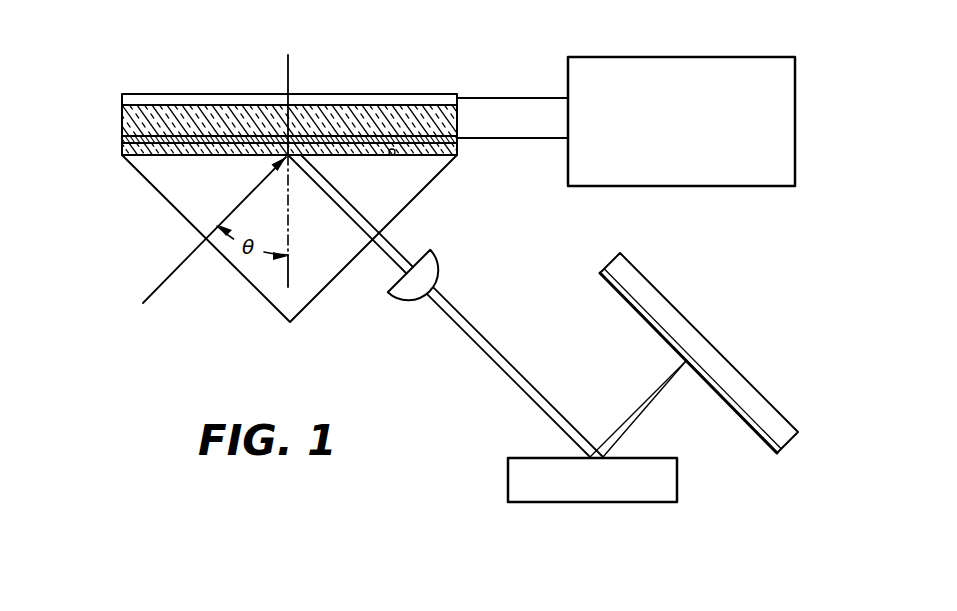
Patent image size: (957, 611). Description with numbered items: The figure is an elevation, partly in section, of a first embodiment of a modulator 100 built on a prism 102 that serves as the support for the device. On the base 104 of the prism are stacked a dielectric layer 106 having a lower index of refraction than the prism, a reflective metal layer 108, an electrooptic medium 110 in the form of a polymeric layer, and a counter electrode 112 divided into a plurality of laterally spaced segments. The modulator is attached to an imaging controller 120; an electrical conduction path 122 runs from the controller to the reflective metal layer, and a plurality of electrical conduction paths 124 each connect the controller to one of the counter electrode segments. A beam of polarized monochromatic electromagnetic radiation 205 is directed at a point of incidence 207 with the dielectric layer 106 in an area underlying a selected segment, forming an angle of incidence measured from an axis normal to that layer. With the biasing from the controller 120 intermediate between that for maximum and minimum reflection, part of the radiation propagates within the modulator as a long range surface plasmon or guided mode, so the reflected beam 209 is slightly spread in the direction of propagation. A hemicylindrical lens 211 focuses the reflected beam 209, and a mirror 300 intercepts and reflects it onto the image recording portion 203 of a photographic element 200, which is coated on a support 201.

The modulator 100 is at (352, 57).
The prism 102 is at (420, 192).
The base 104 is at (393, 158).
The dielectric layer 106 is at (122, 150).
The reflective metal layer 108 is at (122, 138).
The electrooptic medium 110 is at (122, 118).
The counter electrode 112 is at (175, 93).
The imaging controller 120 is at (795, 140).
The electrical conduction path 122 is at (500, 138).
The electrical conduction paths 124 is at (497, 98).
The photographic element 200 is at (816, 338).
The support 201 is at (793, 437).
The image recording portion 203 is at (762, 438).
The beam of polarized monochromatic electromagnetic radiation 205 is at (172, 274).
The point of incidence 207 is at (293, 158).
The reflected beam 209 is at (383, 260).
The lens 211 is at (436, 257).
The mirror 300 is at (680, 502).